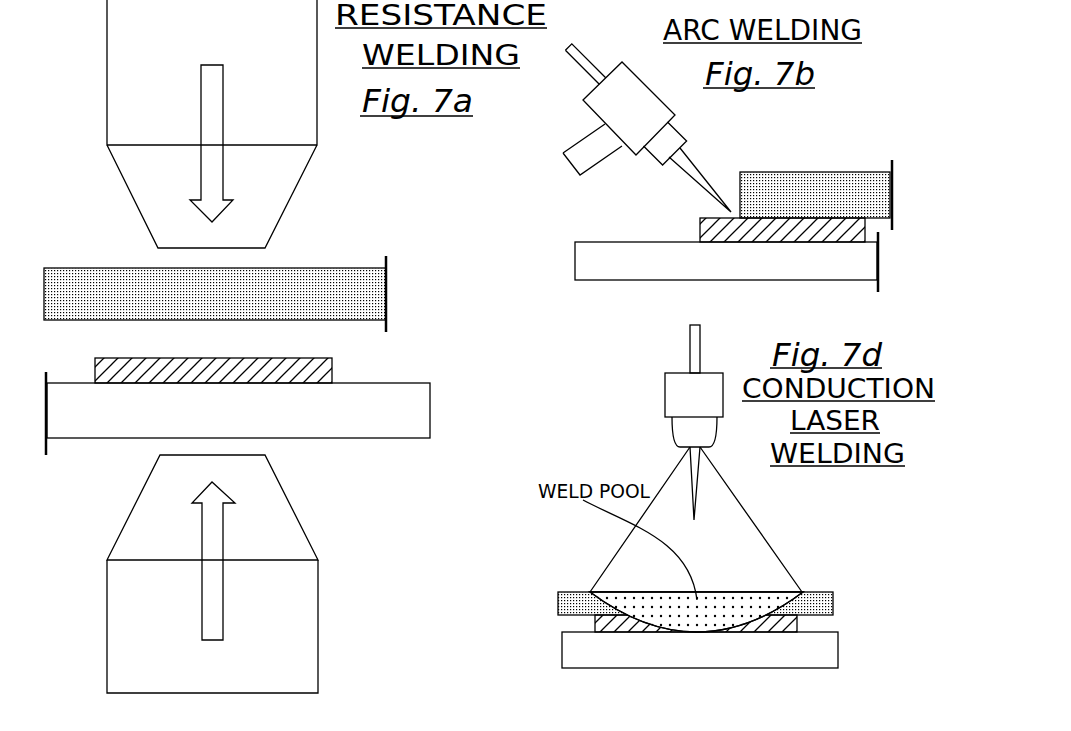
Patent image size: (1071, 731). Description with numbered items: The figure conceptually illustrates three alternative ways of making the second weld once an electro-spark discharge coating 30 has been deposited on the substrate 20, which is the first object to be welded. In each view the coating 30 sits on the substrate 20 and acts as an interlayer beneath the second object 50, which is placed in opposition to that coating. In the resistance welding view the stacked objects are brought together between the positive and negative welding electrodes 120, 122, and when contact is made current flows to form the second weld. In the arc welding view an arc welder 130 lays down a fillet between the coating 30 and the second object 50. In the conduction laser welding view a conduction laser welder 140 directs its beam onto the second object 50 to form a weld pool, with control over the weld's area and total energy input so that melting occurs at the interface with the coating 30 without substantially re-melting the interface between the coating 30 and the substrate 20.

In FIG. 7A, the substrate 20 is at (330, 438).
In FIG. 7B, the substrate 20 is at (673, 282).
In FIG. 7D, the substrate 20 is at (697, 668).
In FIG. 7A, the coating 30 is at (215, 358).
In FIG. 7B, the coating 30 is at (700, 230).
In FIG. 7D, the coating 30 is at (595, 627).
In FIG. 7A, the second object 50 is at (366, 268).
In FIG. 7B, the second object 50 is at (770, 172).
In FIG. 7D, the second object 50 is at (817, 592).
In FIG. 7A, the positive welding electrode 120 is at (135, 70).
In FIG. 7A, the negative welding electrode 122 is at (290, 625).
In FIG. 7B, the arc welder 130 is at (600, 106).
In FIG. 7D, the conduction laser welder 140 is at (678, 397).